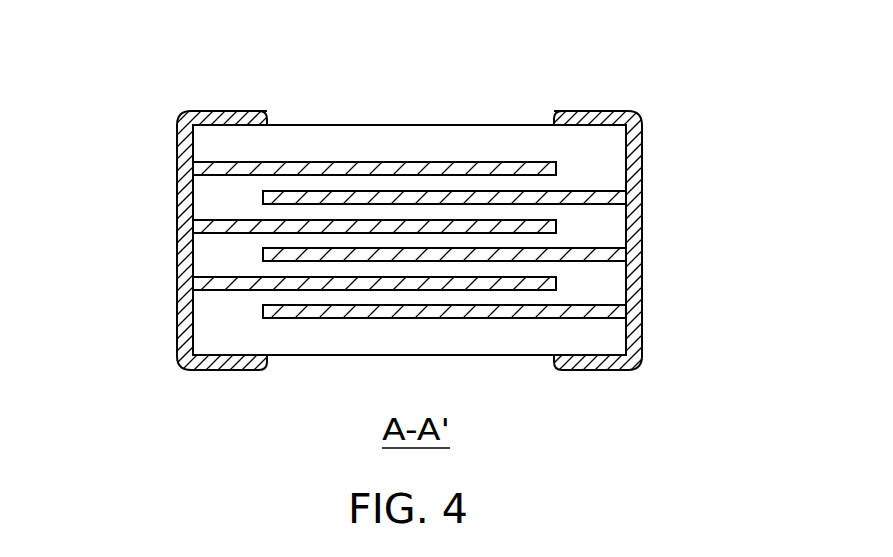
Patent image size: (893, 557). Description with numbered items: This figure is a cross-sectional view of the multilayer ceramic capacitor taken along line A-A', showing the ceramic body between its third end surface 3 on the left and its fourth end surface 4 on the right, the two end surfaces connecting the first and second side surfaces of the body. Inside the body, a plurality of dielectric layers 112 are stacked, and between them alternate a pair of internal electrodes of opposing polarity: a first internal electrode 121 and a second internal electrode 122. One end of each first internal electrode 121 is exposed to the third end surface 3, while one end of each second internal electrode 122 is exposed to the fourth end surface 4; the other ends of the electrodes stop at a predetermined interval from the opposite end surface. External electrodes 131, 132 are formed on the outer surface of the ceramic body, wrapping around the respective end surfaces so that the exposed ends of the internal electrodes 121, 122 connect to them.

The third end surface 3 is at (163, 300).
The fourth end surface 4 is at (446, 185).
The dielectric layer 112 is at (533, 240).
The first internal electrode 121 is at (235, 222).
The second internal electrode 122 is at (602, 258).
The external electrode 131 is at (223, 118).
The external electrode 132 is at (600, 116).